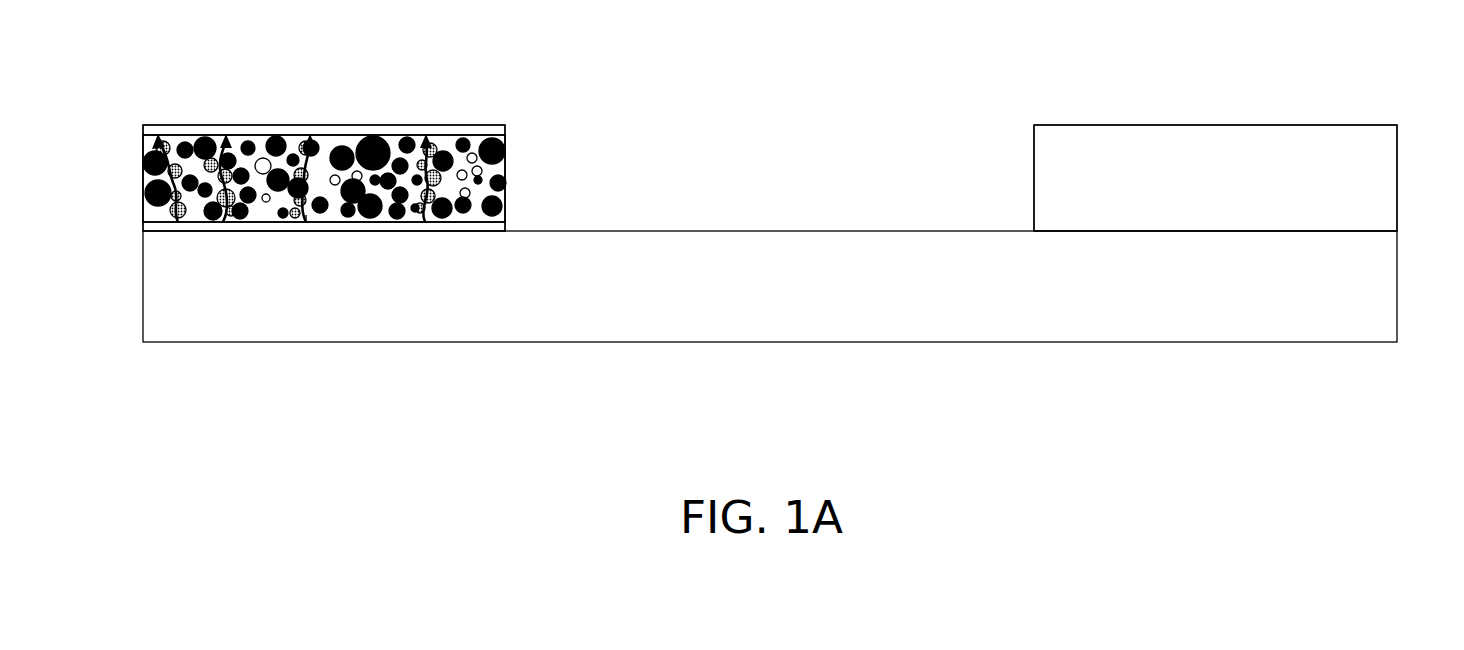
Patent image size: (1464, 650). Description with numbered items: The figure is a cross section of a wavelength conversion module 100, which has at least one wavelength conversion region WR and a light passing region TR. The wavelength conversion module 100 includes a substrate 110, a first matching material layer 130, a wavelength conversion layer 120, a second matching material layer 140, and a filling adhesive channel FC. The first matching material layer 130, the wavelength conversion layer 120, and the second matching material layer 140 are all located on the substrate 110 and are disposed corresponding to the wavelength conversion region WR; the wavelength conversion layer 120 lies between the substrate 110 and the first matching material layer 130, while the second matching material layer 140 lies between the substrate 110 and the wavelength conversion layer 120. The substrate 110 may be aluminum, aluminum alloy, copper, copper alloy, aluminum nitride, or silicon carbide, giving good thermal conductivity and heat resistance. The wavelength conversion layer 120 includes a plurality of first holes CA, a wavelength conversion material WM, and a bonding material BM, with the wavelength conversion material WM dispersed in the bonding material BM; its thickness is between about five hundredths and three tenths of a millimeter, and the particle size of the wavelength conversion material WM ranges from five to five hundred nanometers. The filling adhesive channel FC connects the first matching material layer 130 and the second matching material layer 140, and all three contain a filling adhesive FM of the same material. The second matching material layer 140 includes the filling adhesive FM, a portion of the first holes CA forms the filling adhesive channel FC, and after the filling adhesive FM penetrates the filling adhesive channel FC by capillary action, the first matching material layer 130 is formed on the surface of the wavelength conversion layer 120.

The wavelength conversion module 100 is at (1447, 403).
The substrate 110 is at (1388, 288).
The wavelength conversion layer 120 is at (143, 178).
The first matching material layer 130 is at (143, 128).
The second matching material layer 140 is at (143, 226).
The wavelength conversion material WM is at (507, 150).
The first holes CA is at (447, 181).
The bonding material BM is at (470, 210).
The filling adhesive FM is at (308, 142).
The filling adhesive channel FC is at (297, 222).
The wavelength conversion region WR is at (507, 88).
The light passing region TR is at (1397, 110).